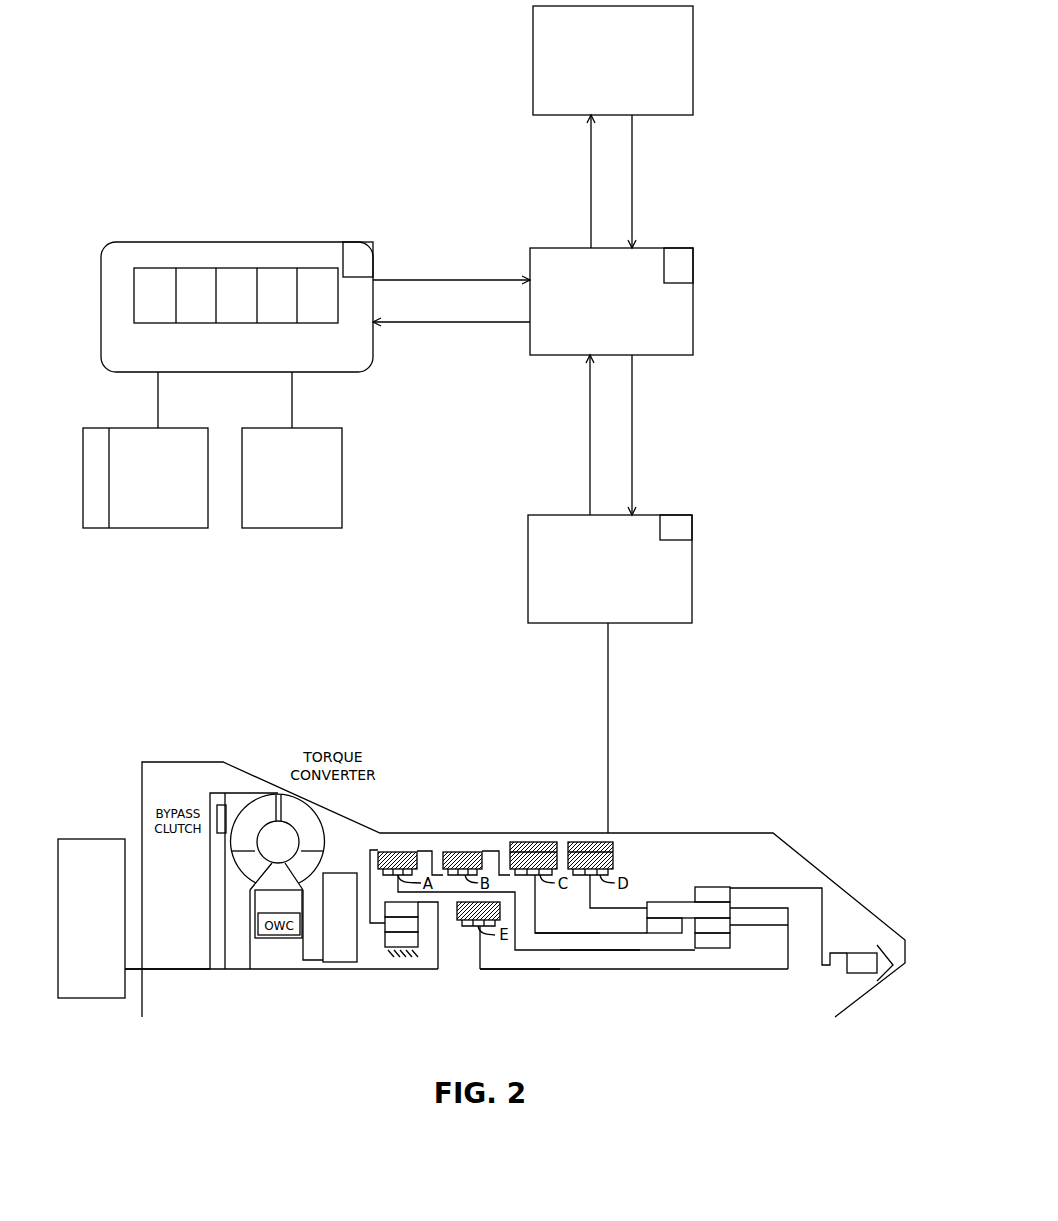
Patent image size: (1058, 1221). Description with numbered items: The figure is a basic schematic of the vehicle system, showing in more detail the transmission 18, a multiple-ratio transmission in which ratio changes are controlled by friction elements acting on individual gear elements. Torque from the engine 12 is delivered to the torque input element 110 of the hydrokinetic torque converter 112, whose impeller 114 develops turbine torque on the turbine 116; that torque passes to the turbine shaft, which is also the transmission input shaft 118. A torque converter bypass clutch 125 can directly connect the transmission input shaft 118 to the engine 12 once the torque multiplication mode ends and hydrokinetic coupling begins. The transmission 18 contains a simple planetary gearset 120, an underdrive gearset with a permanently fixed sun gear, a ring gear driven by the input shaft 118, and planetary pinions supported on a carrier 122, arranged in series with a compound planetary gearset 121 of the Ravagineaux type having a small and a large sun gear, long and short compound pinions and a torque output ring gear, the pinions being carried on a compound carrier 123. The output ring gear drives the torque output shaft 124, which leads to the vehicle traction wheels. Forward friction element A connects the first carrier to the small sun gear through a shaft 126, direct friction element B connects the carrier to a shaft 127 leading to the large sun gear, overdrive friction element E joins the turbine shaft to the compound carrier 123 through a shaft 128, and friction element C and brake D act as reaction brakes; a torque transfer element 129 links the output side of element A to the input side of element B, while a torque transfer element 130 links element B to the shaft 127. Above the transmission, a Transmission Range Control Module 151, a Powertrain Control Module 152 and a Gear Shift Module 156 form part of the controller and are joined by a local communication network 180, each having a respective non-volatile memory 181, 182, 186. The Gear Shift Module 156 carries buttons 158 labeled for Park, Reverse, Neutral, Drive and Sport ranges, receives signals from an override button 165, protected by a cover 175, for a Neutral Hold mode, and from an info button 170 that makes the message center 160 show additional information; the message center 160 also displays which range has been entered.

The engine 12 is at (90, 839).
The transmission 18 is at (812, 856).
The torque input element 110 is at (193, 973).
The hydrokinetic torque converter 112 is at (308, 847).
The impeller 114 is at (332, 825).
The turbine 116 is at (243, 843).
The transmission input shaft 118 is at (323, 973).
The simple planetary gearset 120 is at (431, 938).
The compound planetary gearset 121 is at (743, 938).
The carrier 122 is at (370, 868).
The compound carrier 123 is at (790, 930).
The torque output shaft 124 is at (835, 963).
The torque converter bypass clutch 125 is at (227, 790).
The shaft 126 is at (593, 952).
The shaft 127 is at (560, 935).
The shaft 128 is at (533, 972).
The torque transfer element 129 is at (422, 852).
The torque transfer element 130 is at (507, 860).
The Transmission Range Control Module 151 is at (692, 565).
The Powertrain Control Module 152 is at (693, 298).
The Gear Shift Module 156 is at (330, 242).
The buttons 158 is at (214, 268).
The message center 160 is at (693, 57).
The override button 165 is at (160, 515).
The info button 170 is at (293, 515).
The cover 175 is at (96, 515).
The local communication network 180 is at (636, 450).
The non-volatile memory 181 is at (672, 530).
The non-volatile memory 182 is at (680, 263).
The non-volatile memory 186 is at (358, 257).